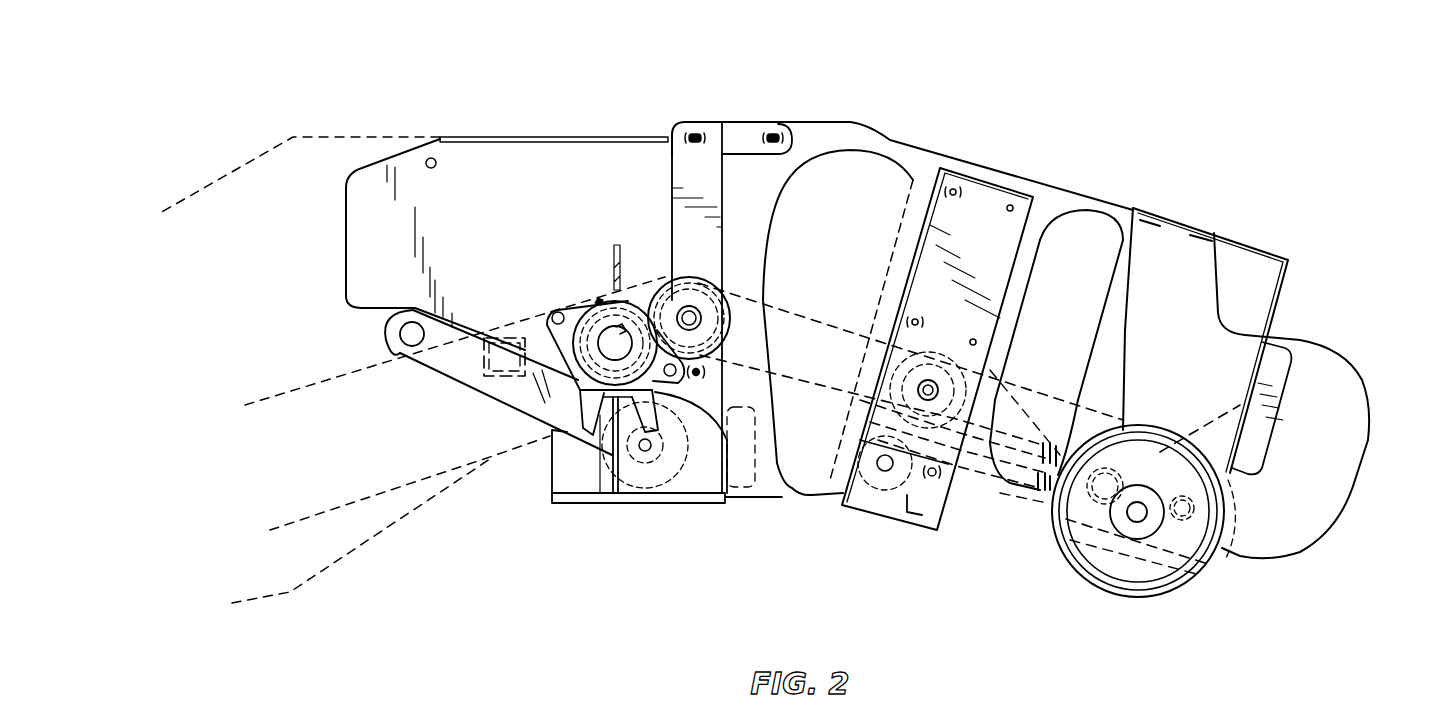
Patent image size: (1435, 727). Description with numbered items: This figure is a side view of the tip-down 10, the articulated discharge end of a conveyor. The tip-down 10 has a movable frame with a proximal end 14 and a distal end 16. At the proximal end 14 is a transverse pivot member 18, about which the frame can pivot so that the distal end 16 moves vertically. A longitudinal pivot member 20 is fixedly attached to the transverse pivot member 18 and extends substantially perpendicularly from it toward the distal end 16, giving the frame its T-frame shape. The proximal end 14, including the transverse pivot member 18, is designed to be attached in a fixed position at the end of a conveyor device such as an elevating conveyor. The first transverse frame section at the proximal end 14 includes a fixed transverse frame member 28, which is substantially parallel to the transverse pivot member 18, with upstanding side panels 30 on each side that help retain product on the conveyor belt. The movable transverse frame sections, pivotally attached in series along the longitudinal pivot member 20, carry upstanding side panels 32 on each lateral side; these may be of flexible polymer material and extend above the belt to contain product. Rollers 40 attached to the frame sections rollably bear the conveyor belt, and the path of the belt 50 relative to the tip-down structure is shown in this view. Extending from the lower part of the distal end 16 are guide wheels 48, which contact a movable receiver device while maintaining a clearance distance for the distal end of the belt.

The tip-down 10 is at (1042, 86).
The proximal end 14 is at (575, 240).
The distal end 16 is at (1340, 560).
The transverse pivot member 18 is at (645, 470).
The longitudinal pivot member 20 is at (817, 380).
The fixed transverse frame member 28 is at (495, 460).
The upstanding side panels 30 is at (808, 135).
The upstanding side panels 32 is at (915, 172).
The rollers 40 is at (882, 440).
The guide wheels 48 is at (1190, 570).
The belt 50 is at (1025, 378).